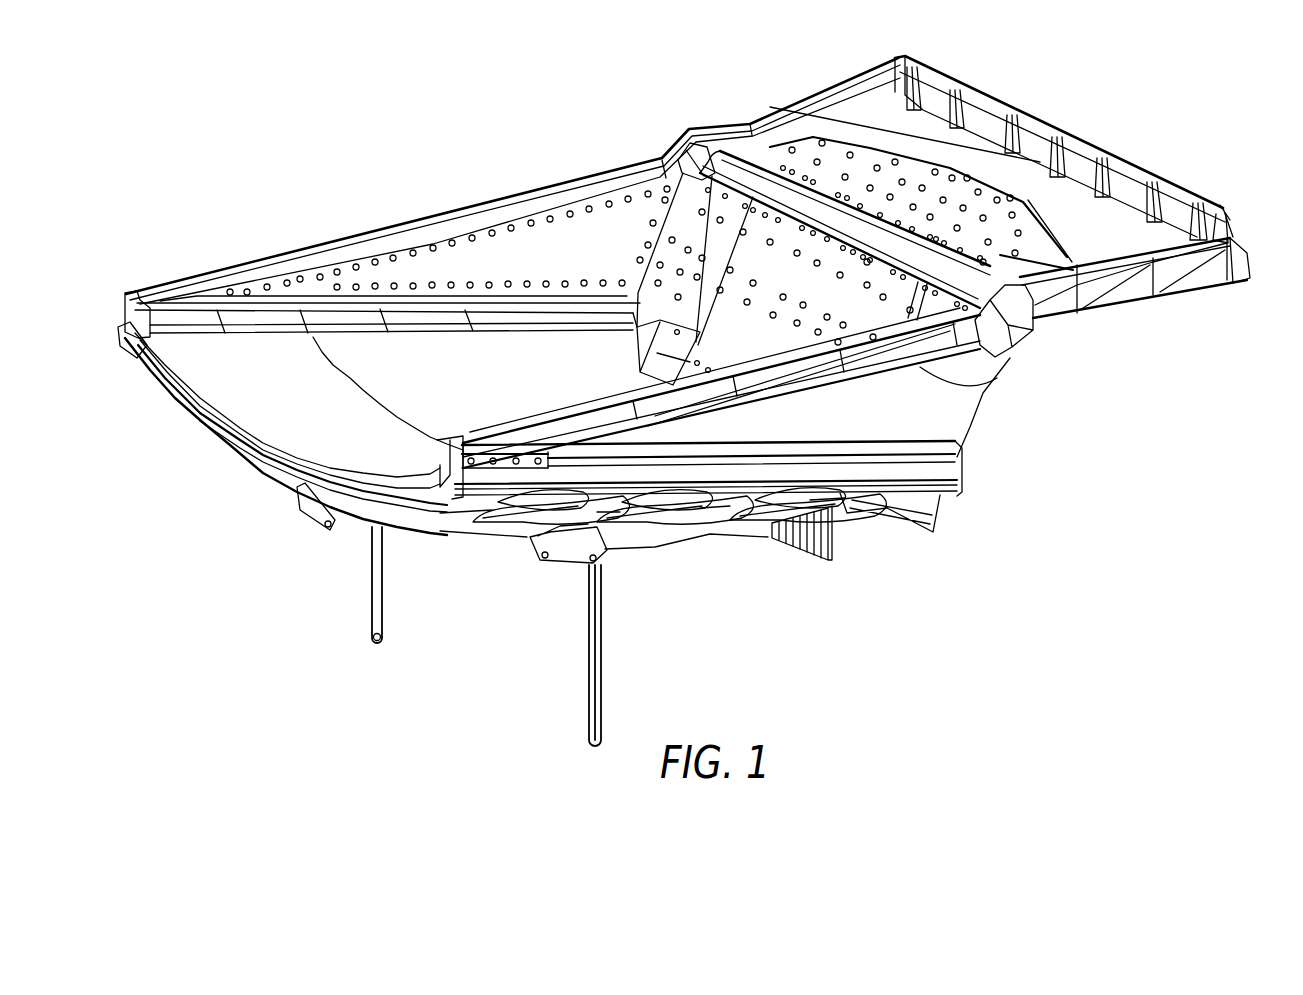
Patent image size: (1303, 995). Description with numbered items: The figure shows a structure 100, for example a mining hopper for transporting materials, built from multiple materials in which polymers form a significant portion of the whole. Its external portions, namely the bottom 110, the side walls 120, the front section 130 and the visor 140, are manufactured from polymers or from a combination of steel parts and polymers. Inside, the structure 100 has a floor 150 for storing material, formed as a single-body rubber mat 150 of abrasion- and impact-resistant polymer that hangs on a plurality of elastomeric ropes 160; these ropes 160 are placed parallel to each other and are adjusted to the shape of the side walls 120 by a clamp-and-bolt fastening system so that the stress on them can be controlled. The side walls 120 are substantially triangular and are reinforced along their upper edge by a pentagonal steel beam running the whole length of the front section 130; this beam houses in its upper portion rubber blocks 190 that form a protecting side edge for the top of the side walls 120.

The structure 100 is at (684, 401).
The bottom 110 is at (482, 547).
The side walls 120 is at (425, 222).
The front section 130 is at (679, 213).
The visor 140 is at (1173, 303).
The floor 150 is at (303, 430).
The elastomeric ropes 160 is at (647, 543).
The rubber blocks 190 is at (920, 368).